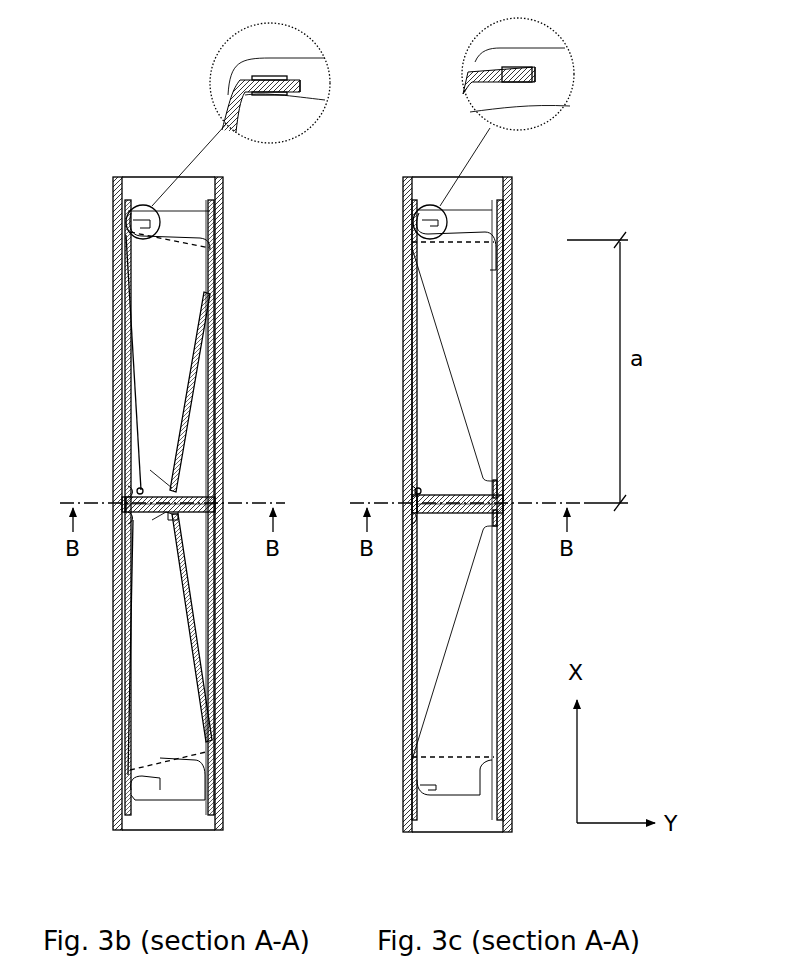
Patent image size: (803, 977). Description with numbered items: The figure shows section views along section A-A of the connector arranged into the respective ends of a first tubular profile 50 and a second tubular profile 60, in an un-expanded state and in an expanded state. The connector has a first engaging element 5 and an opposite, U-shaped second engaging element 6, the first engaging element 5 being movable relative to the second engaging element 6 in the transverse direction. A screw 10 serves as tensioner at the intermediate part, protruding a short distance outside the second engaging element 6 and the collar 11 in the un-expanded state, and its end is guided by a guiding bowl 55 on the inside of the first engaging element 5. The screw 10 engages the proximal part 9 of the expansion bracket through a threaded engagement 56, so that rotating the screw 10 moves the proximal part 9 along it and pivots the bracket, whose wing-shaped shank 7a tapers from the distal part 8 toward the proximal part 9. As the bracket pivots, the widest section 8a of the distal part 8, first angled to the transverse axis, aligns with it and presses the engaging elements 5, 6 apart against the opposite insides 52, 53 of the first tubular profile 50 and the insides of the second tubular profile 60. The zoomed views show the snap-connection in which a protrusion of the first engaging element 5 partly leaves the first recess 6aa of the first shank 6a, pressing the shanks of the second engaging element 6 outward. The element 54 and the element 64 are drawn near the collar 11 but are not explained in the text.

In FIG. 3B, the first engaging element 5 is at (124, 298).
In FIG. 3C, the first engaging element 5 is at (412, 335).
In FIG. 3B, the second engaging element 6 is at (216, 377).
In FIG. 3C, the second engaging element 6 is at (504, 393).
In FIG. 3B, the first shank 6a is at (318, 85).
In FIG. 3C, the first shank 6a is at (558, 83).
In FIG. 3B, the first recess 6aa is at (282, 78).
In FIG. 3C, the first recess 6aa is at (522, 68).
In FIG. 3B, the shank 7a is at (170, 509).
In FIG. 3C, the shank 7a is at (463, 511).
In FIG. 3B, the distal part 8 is at (203, 226).
In FIG. 3C, the distal part 8 is at (487, 226).
In FIG. 3B, the widest section 8a is at (187, 244).
In FIG. 3C, the widest section 8a is at (474, 248).
In FIG. 3B, the proximal part 9 is at (192, 426).
In FIG. 3C, the proximal part 9 is at (486, 458).
In FIG. 3B, the screw 10 is at (190, 504).
In FIG. 3C, the screw 10 is at (490, 504).
In FIG. 3B, the collar 11 is at (128, 503).
In FIG. 3C, the collar 11 is at (416, 503).
In FIG. 3B, the first tubular profile 50 is at (122, 800).
In FIG. 3C, the first tubular profile 50 is at (412, 815).
In FIG. 3B, the inside of first tubular profile 52 is at (126, 825).
In FIG. 3C, the inside of first tubular profile 52 is at (415, 826).
In FIG. 3B, the inside of first tubular profile 53 is at (212, 825).
In FIG. 3C, the inside of first tubular profile 53 is at (500, 826).
In FIG. 3B, the lower bump 54 is at (128, 524).
In FIG. 3B, the guiding bowl 55 is at (143, 487).
In FIG. 3C, the guiding bowl 55 is at (414, 488).
In FIG. 3B, the threaded engagement 56 is at (176, 514).
In FIG. 3B, the second tubular profile 60 is at (115, 385).
In FIG. 3C, the second tubular profile 60 is at (410, 283).
In FIG. 3B, the upper bump 64 is at (128, 490).